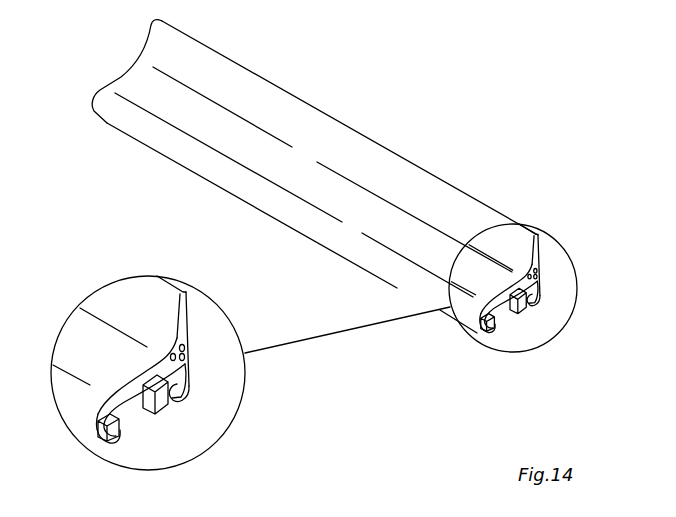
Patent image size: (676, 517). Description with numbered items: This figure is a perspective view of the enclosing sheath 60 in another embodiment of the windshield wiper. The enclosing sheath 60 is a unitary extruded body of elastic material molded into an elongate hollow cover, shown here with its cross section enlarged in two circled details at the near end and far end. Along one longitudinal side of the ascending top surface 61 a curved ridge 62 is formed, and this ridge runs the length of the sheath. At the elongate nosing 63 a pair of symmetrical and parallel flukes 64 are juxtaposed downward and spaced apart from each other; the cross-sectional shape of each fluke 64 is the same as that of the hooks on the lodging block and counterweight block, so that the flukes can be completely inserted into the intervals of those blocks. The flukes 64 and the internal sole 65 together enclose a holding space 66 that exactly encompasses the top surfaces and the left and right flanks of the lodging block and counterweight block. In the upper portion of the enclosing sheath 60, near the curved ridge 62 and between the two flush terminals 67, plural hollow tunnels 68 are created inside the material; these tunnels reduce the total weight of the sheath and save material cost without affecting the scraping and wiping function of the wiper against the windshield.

The enclosing sheath 60 is at (383, 182).
The ascending top surface 61 is at (130, 82).
The curved ridge 62 is at (493, 188).
The elongate nosing 63 is at (82, 422).
The fluke 64 is at (117, 428).
The internal sole 65 is at (147, 412).
The holding space 66 is at (137, 421).
The flush terminal 67 is at (537, 252).
The hollow tunnel 68 is at (540, 280).